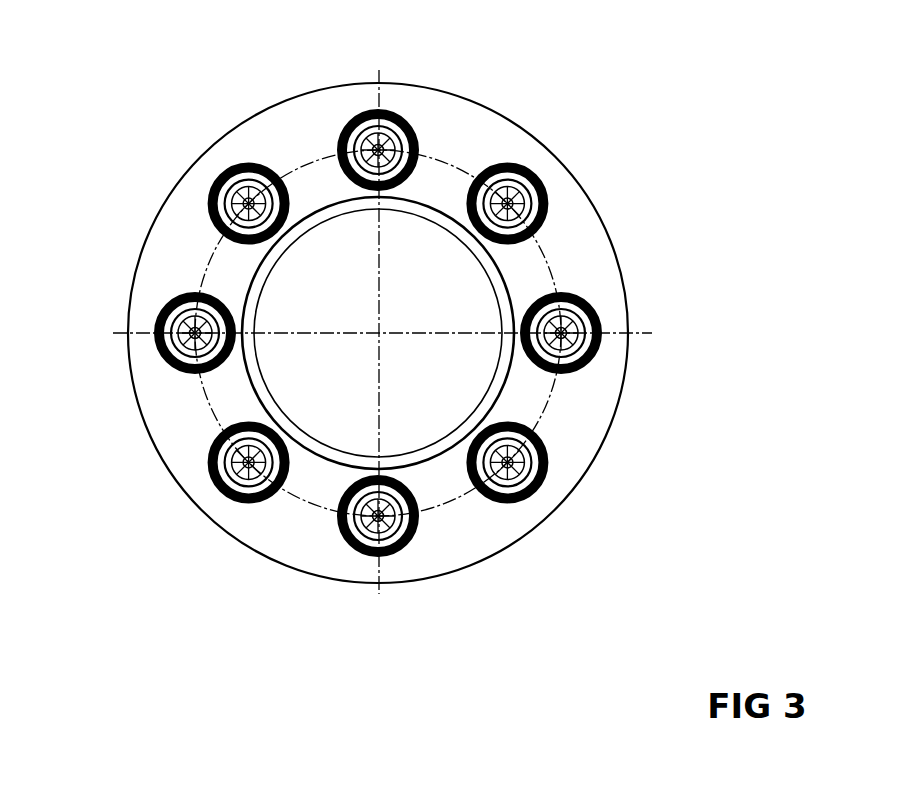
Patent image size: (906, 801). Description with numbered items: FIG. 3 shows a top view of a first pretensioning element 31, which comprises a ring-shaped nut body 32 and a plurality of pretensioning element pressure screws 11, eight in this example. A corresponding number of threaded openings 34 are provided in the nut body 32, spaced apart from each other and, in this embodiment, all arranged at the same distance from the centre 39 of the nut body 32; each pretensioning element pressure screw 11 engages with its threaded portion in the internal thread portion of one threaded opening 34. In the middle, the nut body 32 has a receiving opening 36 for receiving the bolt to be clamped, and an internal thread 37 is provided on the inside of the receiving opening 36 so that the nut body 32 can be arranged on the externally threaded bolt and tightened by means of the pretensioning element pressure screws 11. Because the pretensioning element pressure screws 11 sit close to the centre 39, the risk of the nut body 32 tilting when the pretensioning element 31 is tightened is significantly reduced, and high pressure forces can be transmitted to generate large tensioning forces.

The pretensioning element 31 is at (530, 58).
The nut body 32 is at (600, 254).
The threaded openings 34 is at (400, 130).
The receiving opening 36 is at (435, 399).
The internal thread 37 is at (507, 278).
The centre 39 is at (378, 333).
The pretensioning element pressure screw 11 is at (352, 122).